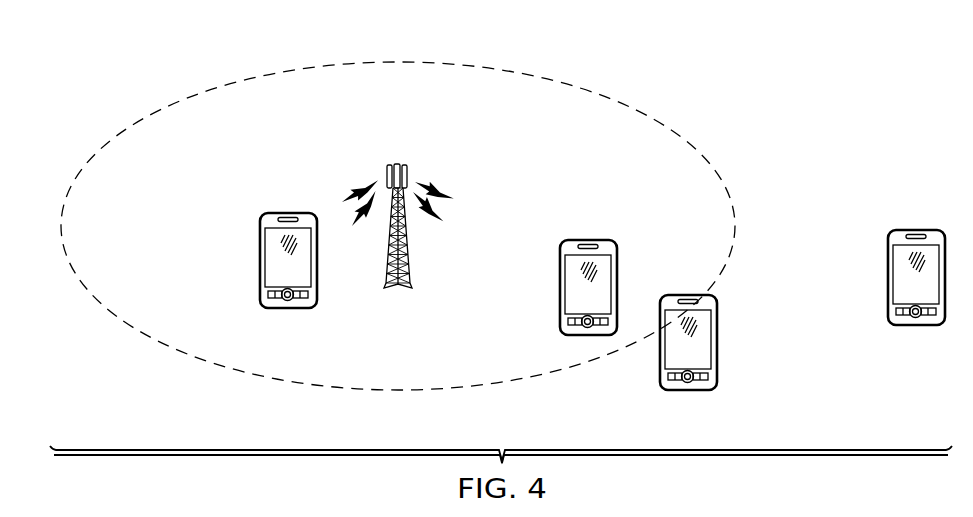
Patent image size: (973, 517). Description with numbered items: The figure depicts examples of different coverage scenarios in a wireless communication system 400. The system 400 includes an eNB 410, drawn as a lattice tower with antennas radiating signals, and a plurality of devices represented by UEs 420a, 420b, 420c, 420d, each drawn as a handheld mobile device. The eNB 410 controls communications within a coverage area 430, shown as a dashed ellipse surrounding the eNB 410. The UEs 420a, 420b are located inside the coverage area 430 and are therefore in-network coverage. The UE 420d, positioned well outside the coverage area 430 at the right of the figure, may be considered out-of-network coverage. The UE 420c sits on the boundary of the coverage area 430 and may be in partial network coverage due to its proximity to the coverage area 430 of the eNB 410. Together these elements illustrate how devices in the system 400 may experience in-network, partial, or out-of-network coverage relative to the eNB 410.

The system 400 is at (643, 53).
The eNB 410 is at (387, 237).
The UE 420a is at (291, 213).
The UE 420b is at (588, 240).
The UE 420c is at (686, 391).
The UE 420d is at (915, 326).
The coverage area 430 is at (347, 60).